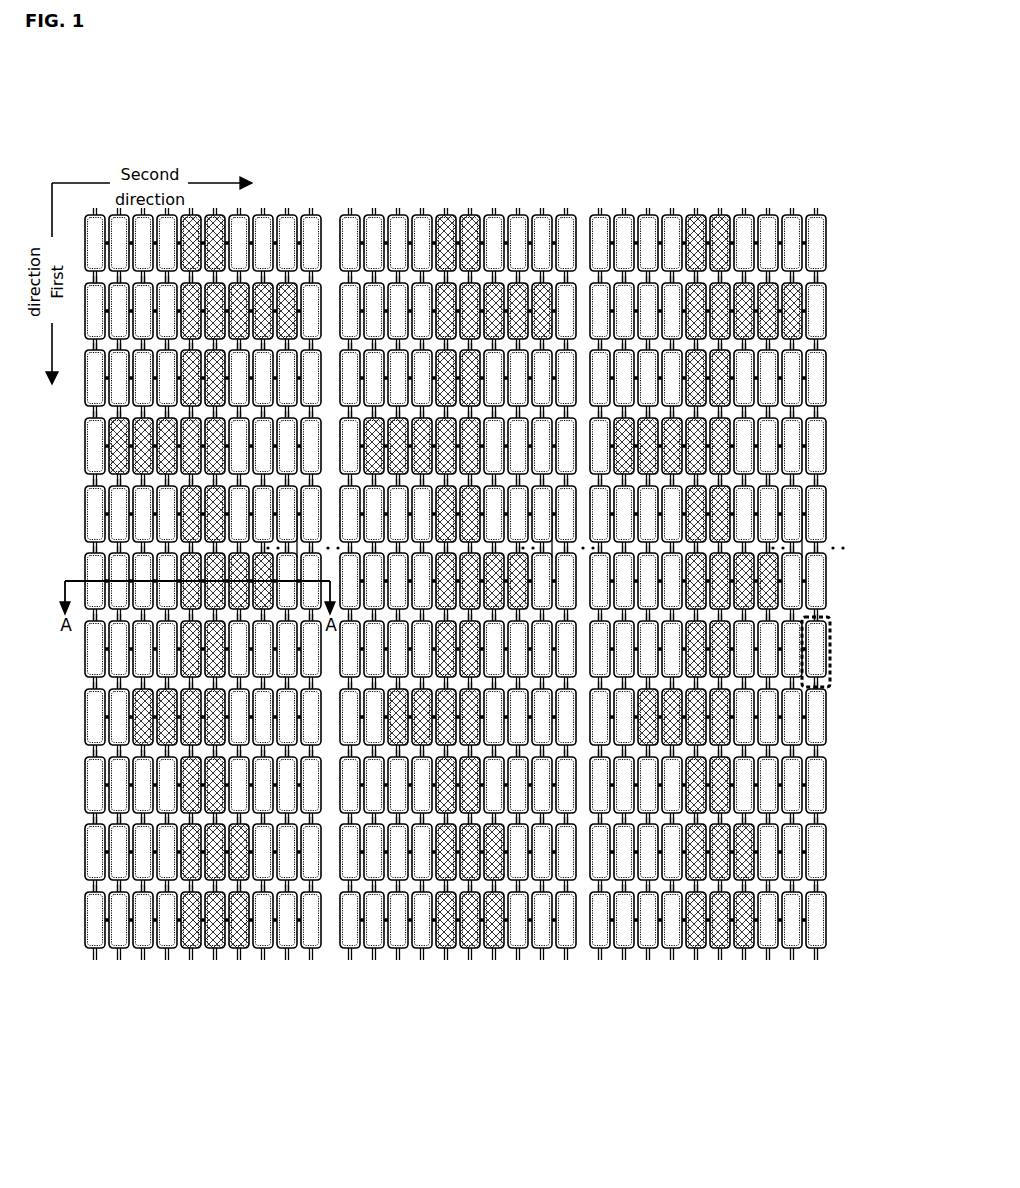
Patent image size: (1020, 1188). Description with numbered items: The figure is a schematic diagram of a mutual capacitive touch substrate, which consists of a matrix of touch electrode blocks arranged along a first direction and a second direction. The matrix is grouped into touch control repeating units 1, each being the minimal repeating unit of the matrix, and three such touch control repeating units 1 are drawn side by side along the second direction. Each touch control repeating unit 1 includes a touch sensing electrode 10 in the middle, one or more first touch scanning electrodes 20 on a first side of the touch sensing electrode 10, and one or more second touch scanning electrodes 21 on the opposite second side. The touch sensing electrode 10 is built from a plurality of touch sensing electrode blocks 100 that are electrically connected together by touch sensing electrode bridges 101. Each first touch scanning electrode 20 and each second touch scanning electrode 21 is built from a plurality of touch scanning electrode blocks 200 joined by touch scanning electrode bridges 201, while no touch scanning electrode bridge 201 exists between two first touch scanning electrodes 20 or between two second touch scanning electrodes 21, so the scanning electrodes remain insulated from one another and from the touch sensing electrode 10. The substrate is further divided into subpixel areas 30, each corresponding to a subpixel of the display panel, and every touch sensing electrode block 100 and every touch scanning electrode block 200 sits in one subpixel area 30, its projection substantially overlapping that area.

The touch control repeating unit 1 is at (575, 143).
The touch sensing electrode 10 is at (435, 213).
The first touch scanning electrode 20 is at (340, 213).
The second touch scanning electrode 21 is at (505, 213).
The touch sensing electrode block 100 is at (468, 944).
The touch scanning electrode block 200 is at (421, 944).
The touch sensing electrode bridge 101 is at (707, 925).
The touch scanning electrode bridge 201 is at (661, 930).
The subpixel area 30 is at (830, 652).